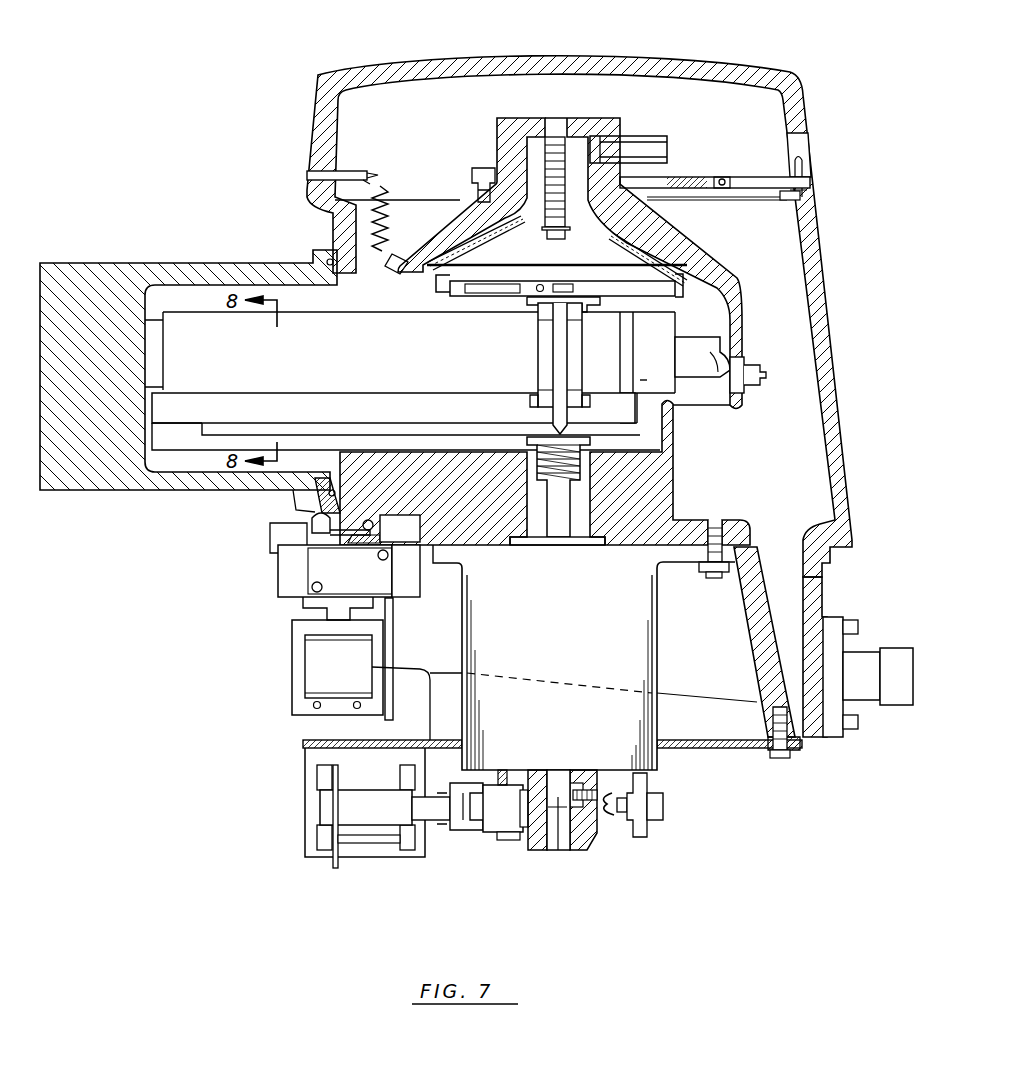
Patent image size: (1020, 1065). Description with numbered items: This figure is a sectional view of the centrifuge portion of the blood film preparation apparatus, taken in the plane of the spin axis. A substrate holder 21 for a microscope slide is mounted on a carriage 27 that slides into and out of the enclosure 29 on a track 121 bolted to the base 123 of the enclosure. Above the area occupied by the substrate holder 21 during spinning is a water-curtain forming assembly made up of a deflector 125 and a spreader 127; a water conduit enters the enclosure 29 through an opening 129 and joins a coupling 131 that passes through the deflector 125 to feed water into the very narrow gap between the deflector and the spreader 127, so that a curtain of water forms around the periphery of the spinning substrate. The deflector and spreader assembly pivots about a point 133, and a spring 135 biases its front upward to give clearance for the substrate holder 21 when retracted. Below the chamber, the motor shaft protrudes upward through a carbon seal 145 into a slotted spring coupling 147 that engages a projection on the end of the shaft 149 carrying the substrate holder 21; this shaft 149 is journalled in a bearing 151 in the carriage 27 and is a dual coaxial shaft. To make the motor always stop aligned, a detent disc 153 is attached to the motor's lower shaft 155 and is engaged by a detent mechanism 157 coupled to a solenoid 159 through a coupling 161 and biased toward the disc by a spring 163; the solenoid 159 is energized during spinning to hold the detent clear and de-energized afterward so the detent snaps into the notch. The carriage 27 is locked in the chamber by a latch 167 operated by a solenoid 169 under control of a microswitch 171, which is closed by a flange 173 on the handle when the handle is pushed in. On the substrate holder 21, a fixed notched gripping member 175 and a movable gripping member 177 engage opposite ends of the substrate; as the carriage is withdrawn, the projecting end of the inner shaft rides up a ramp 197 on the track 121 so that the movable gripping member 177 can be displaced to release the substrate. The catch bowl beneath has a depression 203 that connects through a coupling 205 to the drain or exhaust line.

The substrate holder 21 is at (700, 316).
The carriage 27 is at (193, 330).
The enclosure 29 is at (665, 60).
The track 121 is at (163, 447).
The base 123 is at (470, 535).
The deflector 125 is at (673, 225).
The spreader 127 is at (700, 243).
The opening 129 is at (805, 160).
The coupling 131 is at (652, 135).
The pivot point 133 is at (722, 178).
The spring 135 is at (374, 194).
The carbon seal 145 is at (627, 651).
The spring coupling 147 is at (575, 463).
The shaft 149 is at (558, 368).
The bearing 151 is at (573, 358).
The detent disc 153 is at (588, 835).
The lower shaft 155 is at (560, 797).
The detent mechanism 157 is at (507, 820).
The solenoid 159 is at (330, 807).
The coupling 161 is at (457, 810).
The spring 163 is at (612, 818).
The latch 167 is at (283, 530).
The solenoid 169 is at (320, 670).
The microswitch 171 is at (318, 568).
The flange 173 is at (310, 490).
The fixed gripping member 175 is at (686, 283).
The movable gripping member 177 is at (442, 295).
The ramp 197 is at (217, 433).
The depression 203 is at (783, 597).
The coupling 205 is at (860, 690).